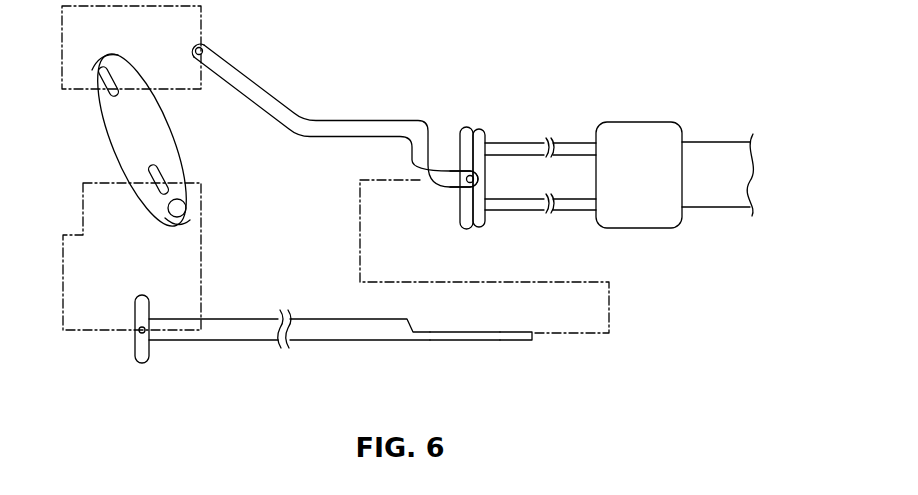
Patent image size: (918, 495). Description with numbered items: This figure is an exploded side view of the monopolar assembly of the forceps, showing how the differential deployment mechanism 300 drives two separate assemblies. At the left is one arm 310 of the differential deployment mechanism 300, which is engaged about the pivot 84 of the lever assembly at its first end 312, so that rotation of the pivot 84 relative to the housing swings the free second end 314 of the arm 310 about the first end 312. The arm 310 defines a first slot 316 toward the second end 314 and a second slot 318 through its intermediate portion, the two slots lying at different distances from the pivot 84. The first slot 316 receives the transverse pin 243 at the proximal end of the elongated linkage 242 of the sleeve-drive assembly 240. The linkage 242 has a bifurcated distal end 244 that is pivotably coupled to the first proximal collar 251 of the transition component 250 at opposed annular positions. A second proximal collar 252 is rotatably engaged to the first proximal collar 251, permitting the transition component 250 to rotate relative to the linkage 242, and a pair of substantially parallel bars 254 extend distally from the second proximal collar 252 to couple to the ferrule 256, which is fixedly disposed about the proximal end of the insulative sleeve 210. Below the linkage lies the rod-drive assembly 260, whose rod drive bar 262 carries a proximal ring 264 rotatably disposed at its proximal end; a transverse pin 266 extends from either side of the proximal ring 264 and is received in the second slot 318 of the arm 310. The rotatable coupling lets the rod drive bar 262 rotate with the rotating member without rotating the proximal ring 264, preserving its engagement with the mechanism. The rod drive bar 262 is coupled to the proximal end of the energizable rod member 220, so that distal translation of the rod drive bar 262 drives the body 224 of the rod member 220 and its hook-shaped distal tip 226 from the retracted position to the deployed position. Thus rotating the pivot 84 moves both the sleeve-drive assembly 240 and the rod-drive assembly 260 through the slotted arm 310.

The pivot 84 is at (173, 212).
The insulative sleeve 210 is at (712, 190).
The energizable rod member 220 is at (418, 336).
The body 224 is at (478, 339).
The distal tip 226 is at (530, 339).
The sleeve-drive assembly 240 is at (398, 96).
The elongated linkage 242 is at (365, 120).
The transverse pin 243 is at (208, 47).
The bifurcated distal end 244 is at (445, 186).
The transition component 250 is at (573, 128).
The first proximal collar 251 is at (466, 127).
The second proximal collar 252 is at (479, 129).
The substantially parallel bars 254 is at (510, 150).
The ferrule 256 is at (650, 138).
The rod-drive assembly 260 is at (351, 343).
The rod drive bar 262 is at (252, 325).
The proximal ring 264 is at (150, 355).
The transverse pin 266 is at (139, 331).
The differential deployment mechanism 300 is at (176, 128).
The arm 310 is at (122, 137).
The first end 312 is at (195, 222).
The second end 314 is at (98, 60).
The first slot 316 is at (106, 88).
The second slot 318 is at (150, 180).